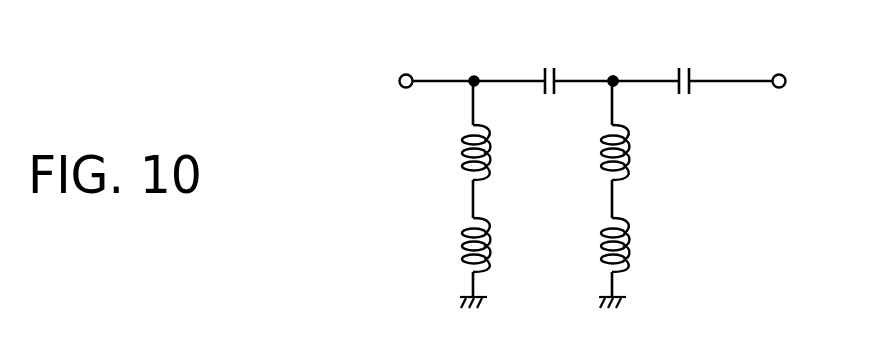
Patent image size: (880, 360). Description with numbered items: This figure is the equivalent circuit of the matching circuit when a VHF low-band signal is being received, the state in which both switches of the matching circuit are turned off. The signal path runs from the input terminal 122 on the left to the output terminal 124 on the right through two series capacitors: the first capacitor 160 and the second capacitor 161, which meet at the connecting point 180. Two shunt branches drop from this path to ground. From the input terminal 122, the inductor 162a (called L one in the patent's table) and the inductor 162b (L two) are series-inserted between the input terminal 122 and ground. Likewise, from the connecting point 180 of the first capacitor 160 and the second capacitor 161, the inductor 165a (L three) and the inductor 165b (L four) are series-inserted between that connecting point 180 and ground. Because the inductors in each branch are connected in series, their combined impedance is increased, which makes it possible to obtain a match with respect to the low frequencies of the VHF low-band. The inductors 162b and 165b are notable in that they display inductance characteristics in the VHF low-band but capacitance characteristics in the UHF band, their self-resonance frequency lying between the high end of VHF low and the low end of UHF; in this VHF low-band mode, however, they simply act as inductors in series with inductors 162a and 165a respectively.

The input terminal 122 is at (401, 71).
The output terminal 124 is at (784, 66).
The first capacitor 160 is at (545, 63).
The second capacitor 161 is at (687, 62).
The connecting point 180 is at (617, 63).
The inductor 162a is at (457, 158).
The inductor 162b is at (457, 252).
The inductor 165a is at (638, 152).
The inductor 165b is at (630, 252).